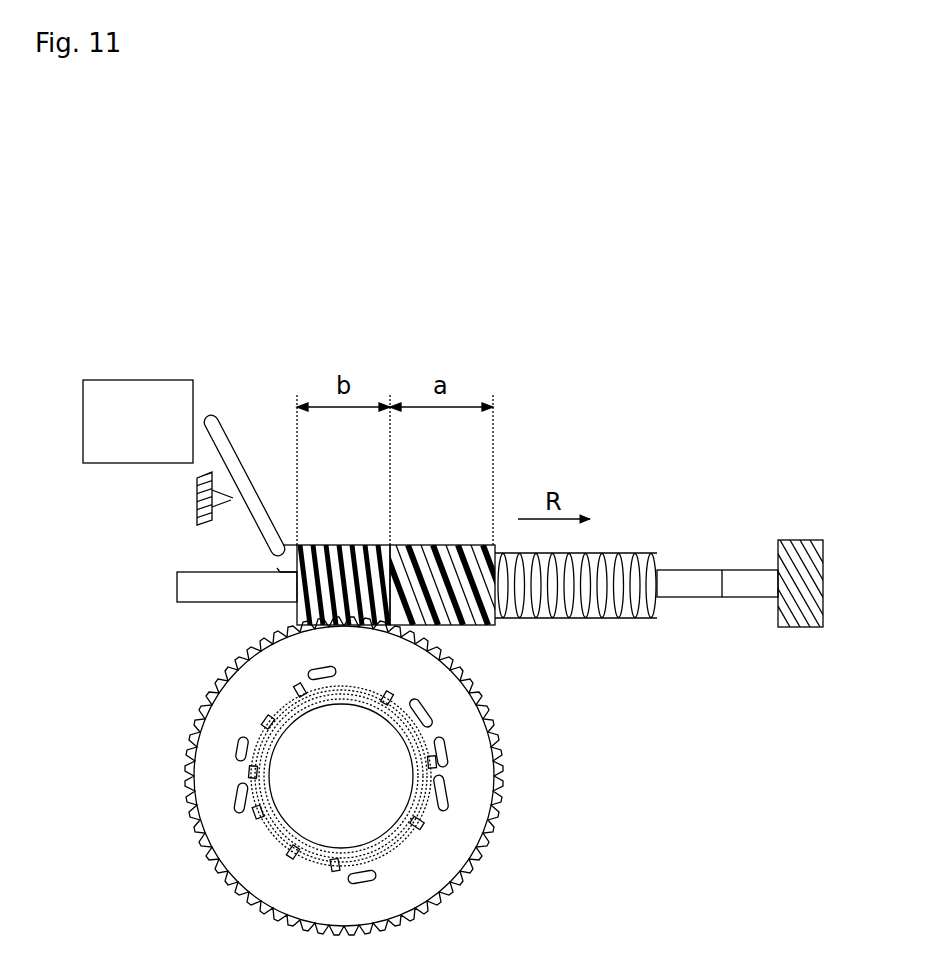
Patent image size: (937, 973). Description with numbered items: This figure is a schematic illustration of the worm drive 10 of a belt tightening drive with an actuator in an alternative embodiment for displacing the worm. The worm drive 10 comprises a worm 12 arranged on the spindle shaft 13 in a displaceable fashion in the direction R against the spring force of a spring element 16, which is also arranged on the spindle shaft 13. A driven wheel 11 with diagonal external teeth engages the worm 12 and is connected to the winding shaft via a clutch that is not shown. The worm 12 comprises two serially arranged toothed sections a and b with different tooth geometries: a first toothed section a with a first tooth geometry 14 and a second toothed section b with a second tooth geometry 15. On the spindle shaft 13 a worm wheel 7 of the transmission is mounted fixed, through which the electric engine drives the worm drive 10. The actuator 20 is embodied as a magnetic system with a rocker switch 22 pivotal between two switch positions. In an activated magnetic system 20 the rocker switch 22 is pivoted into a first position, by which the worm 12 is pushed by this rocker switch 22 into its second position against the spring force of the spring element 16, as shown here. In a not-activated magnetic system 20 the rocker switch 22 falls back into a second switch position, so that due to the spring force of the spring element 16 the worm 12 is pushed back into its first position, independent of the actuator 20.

The worm wheel 7 is at (785, 610).
The worm drive 10 is at (343, 776).
The driven wheel 11 is at (283, 775).
The worm 12 is at (388, 524).
The spindle shaft 13 is at (717, 540).
The first tooth geometry 14 is at (491, 526).
The second tooth geometry 15 is at (344, 536).
The spring element 16 is at (586, 551).
The actuator 20 is at (120, 385).
The rocker switch 22 is at (243, 439).